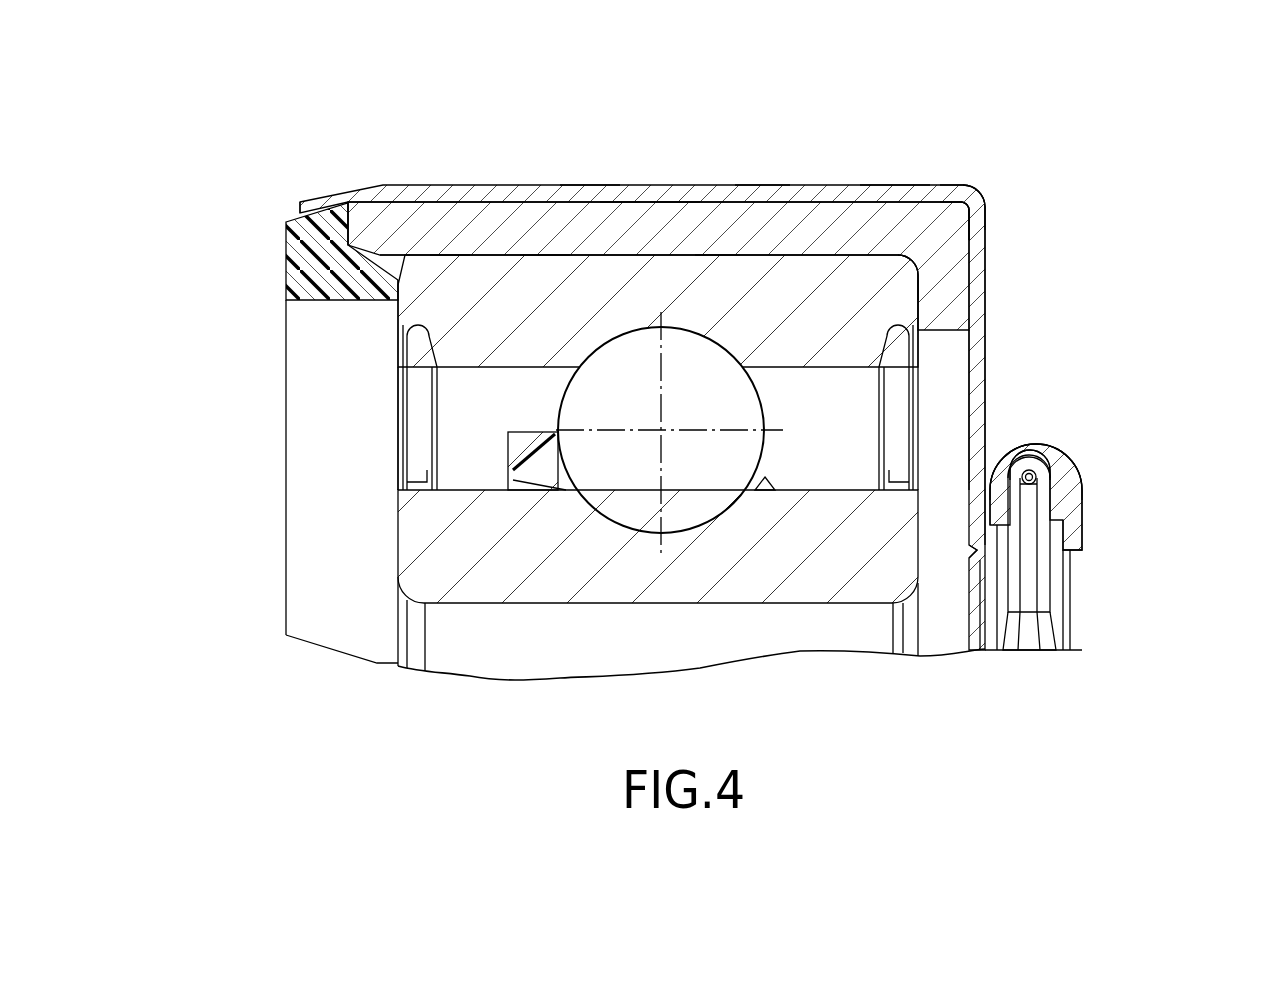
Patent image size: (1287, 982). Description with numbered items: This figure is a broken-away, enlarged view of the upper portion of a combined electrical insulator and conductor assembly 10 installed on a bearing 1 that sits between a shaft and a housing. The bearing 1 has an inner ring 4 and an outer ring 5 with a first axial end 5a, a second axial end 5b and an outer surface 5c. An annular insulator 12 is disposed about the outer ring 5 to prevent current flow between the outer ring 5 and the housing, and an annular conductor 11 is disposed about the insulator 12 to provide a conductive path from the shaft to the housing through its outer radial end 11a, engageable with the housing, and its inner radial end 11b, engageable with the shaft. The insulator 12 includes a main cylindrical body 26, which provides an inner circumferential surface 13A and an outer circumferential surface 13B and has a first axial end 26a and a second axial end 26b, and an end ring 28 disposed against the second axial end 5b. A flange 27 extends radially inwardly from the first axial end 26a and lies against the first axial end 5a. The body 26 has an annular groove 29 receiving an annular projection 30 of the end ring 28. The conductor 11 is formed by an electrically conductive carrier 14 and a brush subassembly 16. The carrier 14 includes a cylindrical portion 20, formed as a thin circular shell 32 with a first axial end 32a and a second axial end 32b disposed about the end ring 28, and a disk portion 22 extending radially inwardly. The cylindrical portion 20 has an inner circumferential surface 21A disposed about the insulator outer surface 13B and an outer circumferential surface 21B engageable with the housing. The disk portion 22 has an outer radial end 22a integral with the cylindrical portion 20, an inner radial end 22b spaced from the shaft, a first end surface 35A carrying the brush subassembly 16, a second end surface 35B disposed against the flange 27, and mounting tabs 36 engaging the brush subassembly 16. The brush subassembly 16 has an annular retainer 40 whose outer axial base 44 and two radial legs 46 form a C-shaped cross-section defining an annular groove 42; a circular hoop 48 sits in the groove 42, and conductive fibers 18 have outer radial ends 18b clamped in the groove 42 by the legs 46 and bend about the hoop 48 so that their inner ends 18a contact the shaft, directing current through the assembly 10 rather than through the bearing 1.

The bearing 1 is at (340, 433).
The inner ring 4 is at (575, 600).
The outer ring 5 is at (500, 265).
The first axial end 5a is at (952, 308).
The second axial end 5b is at (400, 330).
The ring outer surface 5c is at (547, 252).
The combined electrical insulator and conductor assembly 10 is at (272, 130).
The annular conductor 11 is at (1064, 227).
The outer radial end 11a is at (582, 180).
The inner radial end 11b is at (1045, 655).
The annular insulator 12 is at (247, 300).
The inner circumferential surface 13A is at (620, 262).
The outer circumferential surface 13B is at (688, 208).
The electrically conductive carrier 14 is at (990, 142).
The brush subassembly 16 is at (1160, 507).
The conductive fibers 18 is at (1056, 576).
The inner end 18a is at (1074, 640).
The outer radial end 18b is at (1032, 458).
The cylindrical portion 20 is at (852, 168).
The inner circumferential surface 21A is at (716, 262).
The outer circumferential surface 21B is at (755, 184).
The disk portion 22 is at (1002, 334).
The outer radial end 22a is at (990, 218).
The inner radial end 22b is at (970, 592).
The main cylindrical body 26 is at (806, 210).
The first axial end 26a is at (920, 218).
The second axial end 26b is at (333, 212).
The flange 27 is at (955, 270).
The end ring 28 is at (283, 255).
The annular groove 29 is at (447, 262).
The annular projection 30 is at (412, 266).
The circular shell 32 is at (889, 190).
The first axial end 32a is at (985, 193).
The second axial end 32b is at (283, 206).
The first end surface 35A is at (990, 355).
The second end surface 35B is at (970, 370).
The mounting tab 36 is at (1097, 478).
The annular retainer 40 is at (1082, 425).
The annular groove 42 is at (1054, 462).
The outer axial base 44 is at (1027, 462).
The radial legs 46 is at (1004, 494).
The circular hoop 48 is at (1023, 477).